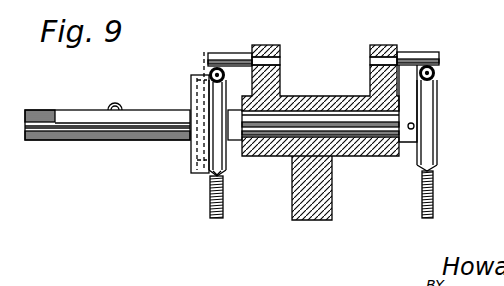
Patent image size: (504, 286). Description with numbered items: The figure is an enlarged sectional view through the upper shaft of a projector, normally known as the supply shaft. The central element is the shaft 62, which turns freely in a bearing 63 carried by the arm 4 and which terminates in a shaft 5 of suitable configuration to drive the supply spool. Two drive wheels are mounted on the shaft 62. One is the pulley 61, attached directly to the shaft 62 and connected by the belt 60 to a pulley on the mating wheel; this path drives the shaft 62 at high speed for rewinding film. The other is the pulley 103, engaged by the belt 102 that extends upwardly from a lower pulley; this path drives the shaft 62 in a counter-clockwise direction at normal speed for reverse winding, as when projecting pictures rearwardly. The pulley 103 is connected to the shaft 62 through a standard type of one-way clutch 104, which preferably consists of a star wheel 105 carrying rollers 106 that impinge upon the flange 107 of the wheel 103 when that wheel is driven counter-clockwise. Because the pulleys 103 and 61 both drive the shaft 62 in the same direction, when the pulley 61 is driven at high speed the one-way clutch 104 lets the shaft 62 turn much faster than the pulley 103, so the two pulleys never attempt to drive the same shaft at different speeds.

The arm 4 is at (292, 184).
The shaft 5 is at (87, 116).
The belt 60 is at (434, 203).
The pulley 61 is at (444, 90).
The shaft 62 is at (325, 123).
The bearing 63 is at (375, 157).
The belt 102 is at (213, 199).
The pulley 103 is at (226, 167).
The one-way clutch 104 is at (195, 153).
The star wheel 105 is at (193, 95).
The rollers 106 is at (203, 52).
The flange 107 is at (193, 75).